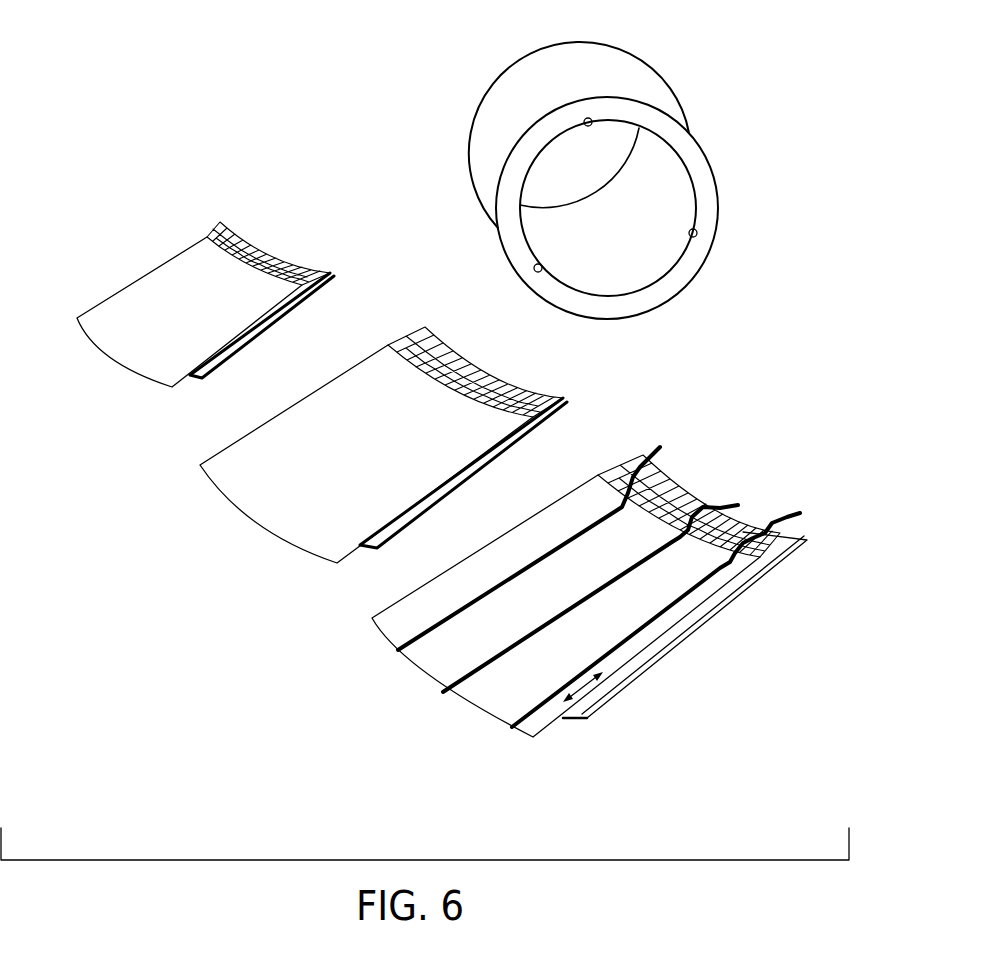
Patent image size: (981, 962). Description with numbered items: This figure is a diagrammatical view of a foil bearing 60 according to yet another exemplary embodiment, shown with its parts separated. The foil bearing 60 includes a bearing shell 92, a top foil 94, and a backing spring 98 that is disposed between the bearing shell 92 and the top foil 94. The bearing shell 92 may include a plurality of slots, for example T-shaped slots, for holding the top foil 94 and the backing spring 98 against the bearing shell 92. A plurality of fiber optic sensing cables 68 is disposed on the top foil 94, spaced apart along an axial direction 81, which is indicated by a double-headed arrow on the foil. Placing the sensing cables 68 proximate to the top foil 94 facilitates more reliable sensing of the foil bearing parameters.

The foil bearing 60 is at (148, 41).
The bearing shell 92 is at (657, 87).
The top foil 94 is at (300, 532).
The backing spring 98 is at (418, 328).
The fiber optic sensing cables 68 is at (660, 448).
The axial direction 81 is at (588, 688).